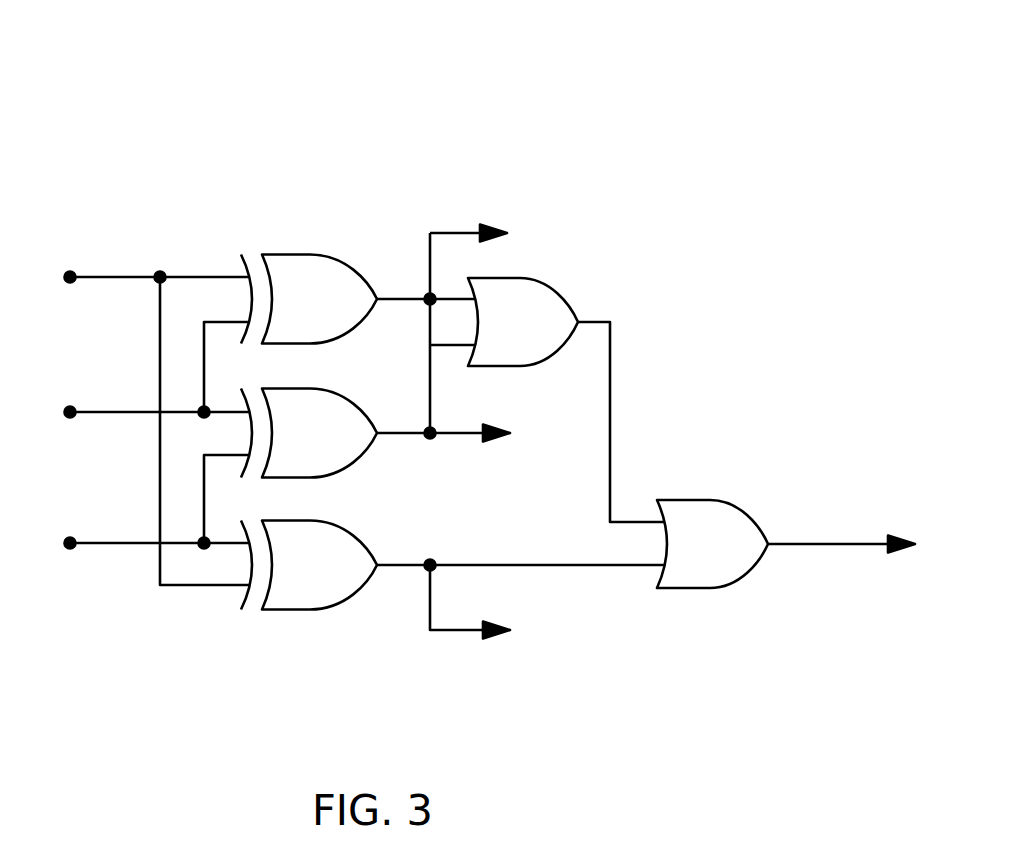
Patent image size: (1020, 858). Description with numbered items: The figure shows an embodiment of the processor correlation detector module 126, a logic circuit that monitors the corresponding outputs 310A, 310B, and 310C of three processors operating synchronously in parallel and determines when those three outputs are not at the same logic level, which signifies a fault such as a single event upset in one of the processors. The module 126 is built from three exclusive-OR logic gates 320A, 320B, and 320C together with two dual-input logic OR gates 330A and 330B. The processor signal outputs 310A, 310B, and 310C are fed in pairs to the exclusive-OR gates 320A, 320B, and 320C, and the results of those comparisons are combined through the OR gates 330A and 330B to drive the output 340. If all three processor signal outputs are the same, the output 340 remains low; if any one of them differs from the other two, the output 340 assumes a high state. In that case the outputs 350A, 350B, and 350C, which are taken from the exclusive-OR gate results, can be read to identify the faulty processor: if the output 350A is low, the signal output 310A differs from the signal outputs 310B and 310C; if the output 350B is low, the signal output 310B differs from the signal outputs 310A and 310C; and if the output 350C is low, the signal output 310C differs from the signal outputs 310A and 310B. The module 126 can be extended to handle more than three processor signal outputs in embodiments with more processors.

The processor correlation detector module 126 is at (380, 101).
The processor signal output 310A is at (150, 417).
The processor signal output 310B is at (149, 370).
The processor signal output 310C is at (149, 502).
The exclusive-OR logic gate 320A is at (358, 299).
The exclusive-OR logic gate 320B is at (335, 433).
The exclusive-OR logic gate 320C is at (453, 565).
The dual-input logic OR gate 330A is at (545, 377).
The dual-input logic OR gate 330B is at (712, 544).
The output 340 is at (843, 532).
The output 350A is at (471, 421).
The output 350B is at (472, 599).
The output 350C is at (472, 220).